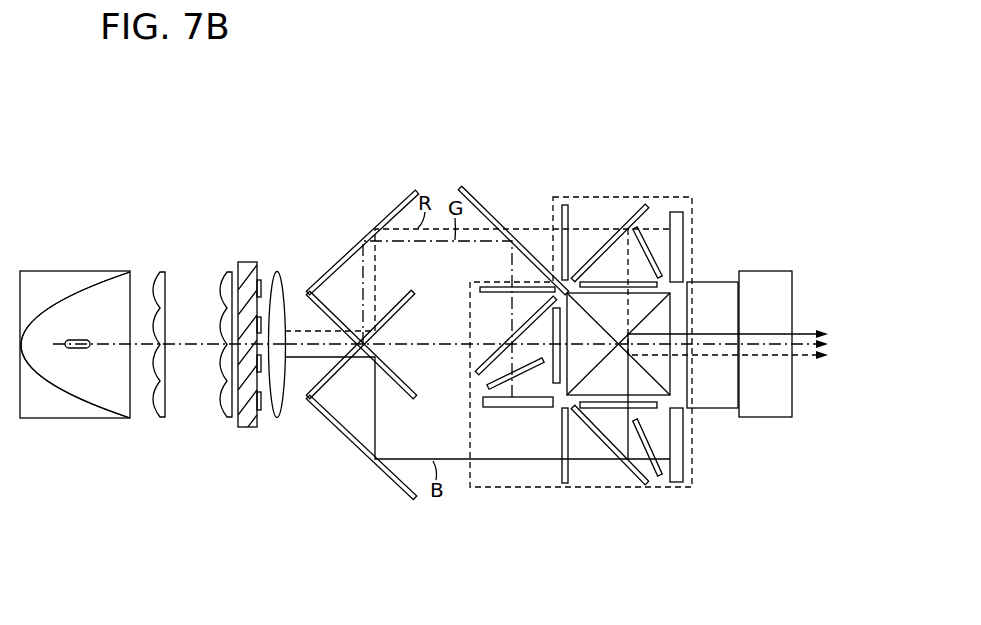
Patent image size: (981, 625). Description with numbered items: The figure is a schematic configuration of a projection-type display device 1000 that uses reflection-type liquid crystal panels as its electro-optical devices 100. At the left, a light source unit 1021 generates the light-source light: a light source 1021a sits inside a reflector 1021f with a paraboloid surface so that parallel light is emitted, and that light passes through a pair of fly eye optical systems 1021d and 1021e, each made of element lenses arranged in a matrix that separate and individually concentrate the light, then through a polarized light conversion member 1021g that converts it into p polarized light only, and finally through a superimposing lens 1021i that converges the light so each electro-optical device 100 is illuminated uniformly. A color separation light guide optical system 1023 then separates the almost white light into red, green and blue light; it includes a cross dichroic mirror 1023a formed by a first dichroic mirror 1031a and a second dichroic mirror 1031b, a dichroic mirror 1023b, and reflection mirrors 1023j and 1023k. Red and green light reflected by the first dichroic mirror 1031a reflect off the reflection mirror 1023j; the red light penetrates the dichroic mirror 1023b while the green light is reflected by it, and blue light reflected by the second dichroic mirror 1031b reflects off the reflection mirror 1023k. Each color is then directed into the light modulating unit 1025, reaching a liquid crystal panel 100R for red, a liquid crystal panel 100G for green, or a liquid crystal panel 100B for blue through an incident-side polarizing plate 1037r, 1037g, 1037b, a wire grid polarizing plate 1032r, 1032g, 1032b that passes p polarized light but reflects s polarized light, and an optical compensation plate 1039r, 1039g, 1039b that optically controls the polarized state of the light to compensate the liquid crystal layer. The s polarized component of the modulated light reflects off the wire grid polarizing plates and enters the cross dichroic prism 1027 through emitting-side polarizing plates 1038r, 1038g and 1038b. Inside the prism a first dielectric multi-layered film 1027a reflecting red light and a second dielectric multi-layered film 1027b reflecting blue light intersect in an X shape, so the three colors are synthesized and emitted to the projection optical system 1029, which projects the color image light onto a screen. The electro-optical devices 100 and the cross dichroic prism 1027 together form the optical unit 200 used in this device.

The projection-type display device 1000 is at (362, 115).
The light source unit 1021 is at (137, 157).
The light source 1021a is at (103, 305).
The fly eye optical system 1021d is at (162, 272).
The fly eye optical system 1021e is at (227, 270).
The reflector 1021f is at (74, 395).
The polarized light conversion member 1021g is at (252, 262).
The superimposing lens 1021i is at (277, 272).
The color separation light guide optical system 1023 is at (441, 155).
The cross dichroic mirror 1023a is at (428, 302).
The dichroic mirror 1023b is at (480, 207).
The reflection mirror 1023j is at (392, 208).
The reflection mirror 1023k is at (400, 490).
The first dichroic mirror 1031a is at (381, 326).
The second dichroic mirror 1031b is at (339, 316).
The optical unit 200 is at (565, 197).
The electro-optical device 100 is at (595, 349).
The liquid crystal panel for red 100R is at (693, 210).
The liquid crystal panel for green 100G is at (507, 408).
The liquid crystal panel for blue 100B is at (678, 484).
The polarizing plate 1037r is at (568, 206).
The polarized plate 1037g is at (478, 290).
The polarizing plate 1037b is at (572, 482).
The wire grid polarizing plate 1032r is at (640, 212).
The wire grid polarizing plate 1032g is at (491, 383).
The wire grid polarizing plate 1032b is at (640, 480).
The optical compensation plate 1039r is at (641, 224).
The optical compensation plate 1039g is at (489, 385).
The optical compensation plate 1039b is at (658, 478).
The emitting-side polarizing plate 1038r is at (671, 286).
The emitting-side polarizing plate 1038g is at (557, 408).
The emitting-side polarizing plate 1038b is at (680, 409).
The light modulating unit 1025 is at (748, 203).
The cross dichroic prism 1027 is at (671, 312).
The first dielectric multi-layered film 1027a is at (671, 373).
The second dielectric multi-layered film 1027b is at (672, 322).
The projection optical system 1029 is at (775, 274).